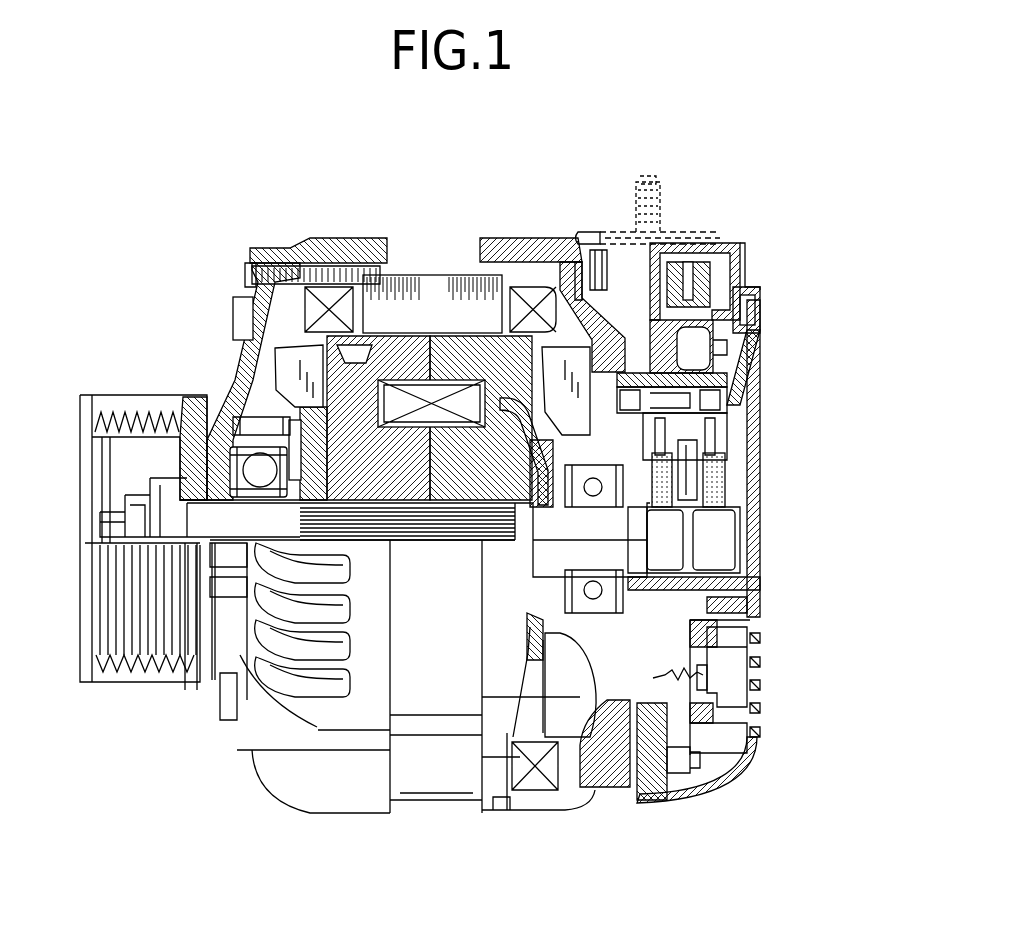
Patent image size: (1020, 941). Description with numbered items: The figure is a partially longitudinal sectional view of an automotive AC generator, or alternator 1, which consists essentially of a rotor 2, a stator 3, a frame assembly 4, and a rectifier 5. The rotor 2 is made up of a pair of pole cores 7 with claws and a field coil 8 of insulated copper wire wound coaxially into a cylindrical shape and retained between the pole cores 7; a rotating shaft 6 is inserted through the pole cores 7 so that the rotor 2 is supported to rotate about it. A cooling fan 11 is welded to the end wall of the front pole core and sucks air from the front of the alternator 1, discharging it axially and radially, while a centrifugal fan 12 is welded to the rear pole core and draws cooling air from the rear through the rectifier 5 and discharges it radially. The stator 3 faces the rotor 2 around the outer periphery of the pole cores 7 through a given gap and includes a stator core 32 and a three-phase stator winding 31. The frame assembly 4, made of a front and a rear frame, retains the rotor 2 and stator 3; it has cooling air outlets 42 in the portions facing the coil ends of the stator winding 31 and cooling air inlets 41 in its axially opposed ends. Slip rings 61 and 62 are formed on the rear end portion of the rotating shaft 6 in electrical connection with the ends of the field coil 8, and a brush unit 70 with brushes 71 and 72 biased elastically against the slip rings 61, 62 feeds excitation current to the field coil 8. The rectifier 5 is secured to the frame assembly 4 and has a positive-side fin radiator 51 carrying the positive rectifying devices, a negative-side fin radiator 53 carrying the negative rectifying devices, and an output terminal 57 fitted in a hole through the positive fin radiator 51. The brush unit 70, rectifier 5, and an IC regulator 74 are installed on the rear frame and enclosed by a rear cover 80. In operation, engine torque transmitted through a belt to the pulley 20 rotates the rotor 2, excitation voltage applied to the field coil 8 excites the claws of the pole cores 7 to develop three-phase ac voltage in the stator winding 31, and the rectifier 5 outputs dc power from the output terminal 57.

The alternator 1 is at (716, 177).
The rotor 2 is at (292, 331).
The stator 3 is at (660, 274).
The frame assembly 4 is at (309, 788).
The rectifier 5 is at (728, 687).
The rotating shaft 6 is at (217, 523).
The pole cores 7 is at (293, 268).
The field coil 8 is at (432, 394).
The cooling fan 11 is at (291, 366).
The centrifugal fan 12 is at (573, 390).
The pulley 20 is at (183, 406).
The stator winding 31 is at (523, 278).
The stator core 32 is at (409, 304).
The cooling air inlets 41 is at (235, 612).
The cooling air outlets 42 is at (315, 638).
The positive-side fin radiator 51 is at (717, 718).
The negative-side fin radiator 53 is at (631, 792).
The output terminal 57 is at (648, 178).
The slip ring 61 is at (662, 530).
The slip ring 62 is at (720, 558).
The brush unit 70 is at (742, 441).
The brush 71 is at (662, 473).
The brush 72 is at (715, 500).
The IC regulator 74 is at (692, 357).
The rear cover 80 is at (694, 804).